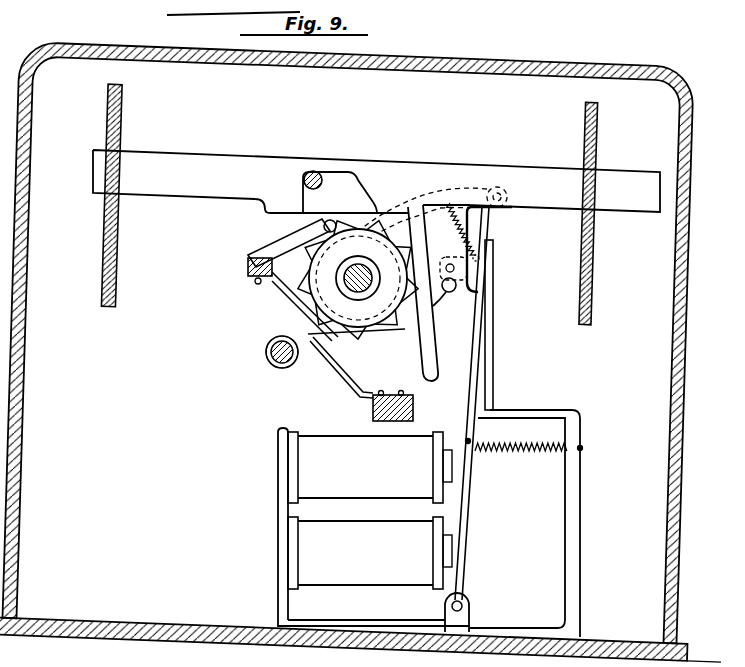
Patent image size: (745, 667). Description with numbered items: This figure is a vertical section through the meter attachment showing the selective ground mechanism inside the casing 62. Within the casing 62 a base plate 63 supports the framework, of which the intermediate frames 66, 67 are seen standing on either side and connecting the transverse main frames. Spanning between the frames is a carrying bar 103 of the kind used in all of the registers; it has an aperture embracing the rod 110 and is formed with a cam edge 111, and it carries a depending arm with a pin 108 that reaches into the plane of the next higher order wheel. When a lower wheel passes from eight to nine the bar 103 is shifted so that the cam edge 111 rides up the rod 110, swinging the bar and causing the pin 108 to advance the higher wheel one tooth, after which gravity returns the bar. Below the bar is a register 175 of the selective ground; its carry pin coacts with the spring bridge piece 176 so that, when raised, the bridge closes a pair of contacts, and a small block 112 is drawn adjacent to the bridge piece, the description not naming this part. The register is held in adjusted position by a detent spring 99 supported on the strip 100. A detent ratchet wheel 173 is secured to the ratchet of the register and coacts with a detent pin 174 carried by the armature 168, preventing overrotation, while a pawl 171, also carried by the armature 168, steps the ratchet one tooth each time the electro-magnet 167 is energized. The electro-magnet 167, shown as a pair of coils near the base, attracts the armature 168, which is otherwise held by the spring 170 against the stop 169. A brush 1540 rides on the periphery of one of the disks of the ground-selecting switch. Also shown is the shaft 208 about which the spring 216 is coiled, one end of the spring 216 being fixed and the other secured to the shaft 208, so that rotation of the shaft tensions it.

The casing 62 is at (515, 44).
The base plate 63 is at (195, 620).
The intermediate frame 66 is at (125, 108).
The intermediate frame 67 is at (602, 116).
The bar 103 is at (376, 181).
The rod 110 is at (316, 171).
The cam edge 111 is at (365, 182).
The pawl 171 is at (427, 187).
The register 175 is at (358, 280).
The spring bridge piece 176 is at (280, 242).
The block 112 is at (300, 271).
The detent ratchet wheel 173 is at (291, 279).
The brush 1540 is at (292, 305).
The detent pin 174 is at (466, 268).
The pin 108 is at (452, 294).
The detent spring 99 is at (352, 376).
The strip 100 is at (414, 404).
The spring 216 is at (266, 353).
The shaft 208 is at (281, 369).
The stop 169 is at (493, 392).
The spring 170 is at (528, 452).
The armature 168 is at (467, 507).
The electro-magnet 167 is at (374, 527).